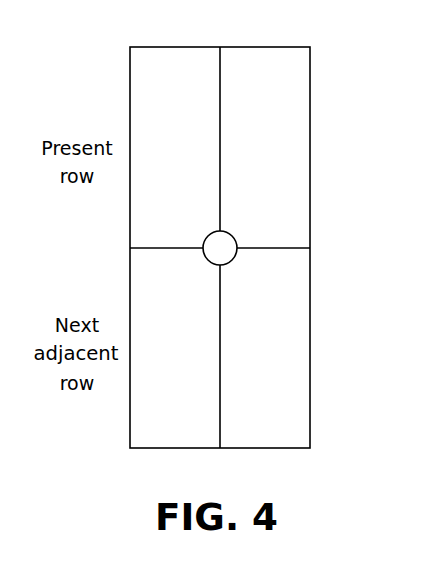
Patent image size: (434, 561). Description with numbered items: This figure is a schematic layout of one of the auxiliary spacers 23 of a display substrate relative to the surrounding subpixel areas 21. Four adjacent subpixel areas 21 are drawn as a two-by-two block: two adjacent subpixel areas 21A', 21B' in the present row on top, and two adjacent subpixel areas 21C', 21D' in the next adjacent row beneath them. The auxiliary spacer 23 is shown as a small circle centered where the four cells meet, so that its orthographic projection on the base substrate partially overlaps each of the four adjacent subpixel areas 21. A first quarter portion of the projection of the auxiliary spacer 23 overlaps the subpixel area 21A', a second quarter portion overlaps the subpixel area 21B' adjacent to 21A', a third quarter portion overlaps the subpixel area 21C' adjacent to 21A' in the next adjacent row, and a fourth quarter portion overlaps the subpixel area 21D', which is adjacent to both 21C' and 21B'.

The subpixel area 21 is at (130, 80).
The subpixel area 21A' is at (175, 147).
The subpixel area 21B' is at (265, 147).
The subpixel area 21C' is at (175, 348).
The subpixel area 21D' is at (265, 348).
The auxiliary spacer 23 is at (234, 258).